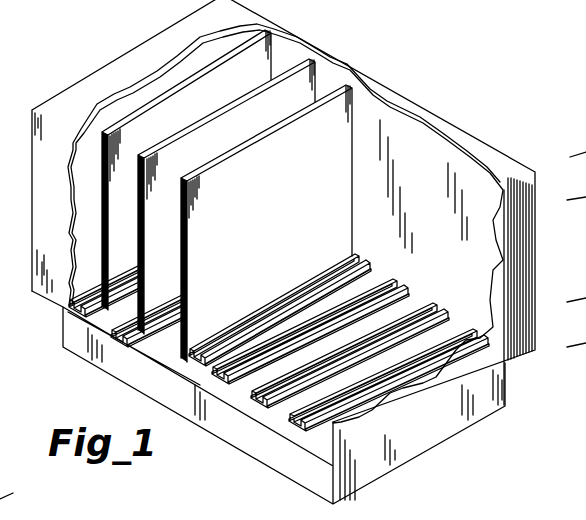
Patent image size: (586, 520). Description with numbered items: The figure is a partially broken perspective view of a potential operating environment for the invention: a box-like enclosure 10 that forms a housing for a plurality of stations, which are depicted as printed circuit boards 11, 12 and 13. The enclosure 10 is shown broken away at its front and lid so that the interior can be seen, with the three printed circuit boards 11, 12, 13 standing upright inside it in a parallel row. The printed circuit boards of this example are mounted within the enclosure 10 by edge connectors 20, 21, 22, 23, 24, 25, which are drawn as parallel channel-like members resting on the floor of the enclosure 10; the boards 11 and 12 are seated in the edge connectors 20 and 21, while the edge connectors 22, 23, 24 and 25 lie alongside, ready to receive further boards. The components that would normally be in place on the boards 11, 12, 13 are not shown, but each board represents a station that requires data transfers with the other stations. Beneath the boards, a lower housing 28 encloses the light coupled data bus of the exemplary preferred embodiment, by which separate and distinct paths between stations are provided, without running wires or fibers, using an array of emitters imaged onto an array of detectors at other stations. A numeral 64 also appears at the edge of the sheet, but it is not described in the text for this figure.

The enclosure 10 is at (447, 120).
The printed circuit board 11 is at (308, 45).
The printed circuit board 12 is at (327, 70).
The printed circuit board 13 is at (357, 100).
The edge connector 20 is at (113, 337).
The edge connector 21 is at (158, 360).
The edge connector 22 is at (255, 313).
The edge connector 23 is at (386, 270).
The edge connector 24 is at (422, 287).
The edge connector 25 is at (473, 313).
The lower housing 28 is at (407, 443).
The adjacent figure element 64 is at (293, 325).